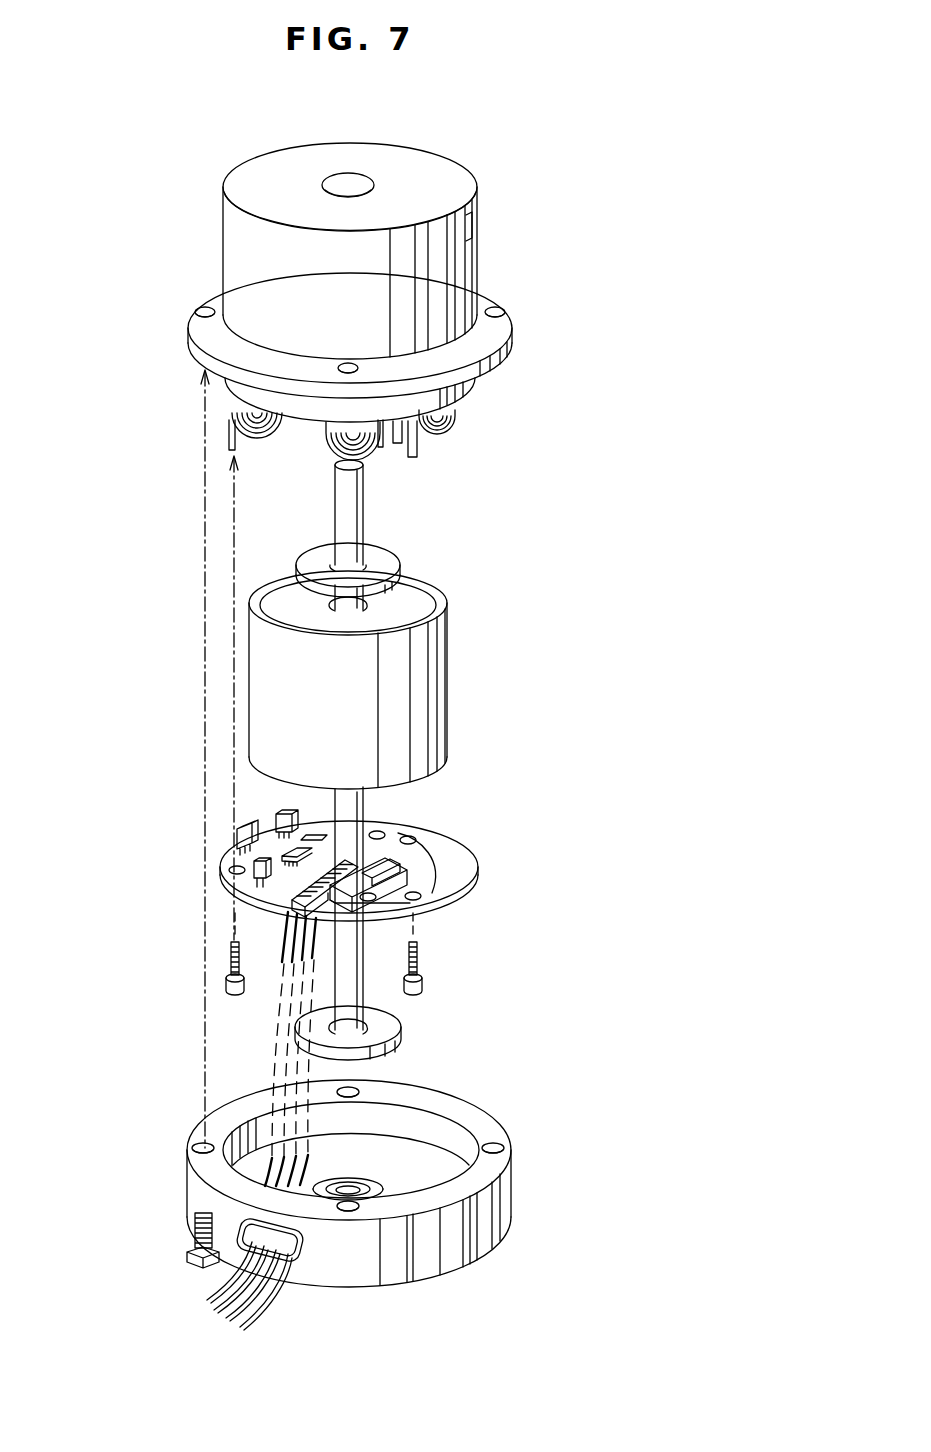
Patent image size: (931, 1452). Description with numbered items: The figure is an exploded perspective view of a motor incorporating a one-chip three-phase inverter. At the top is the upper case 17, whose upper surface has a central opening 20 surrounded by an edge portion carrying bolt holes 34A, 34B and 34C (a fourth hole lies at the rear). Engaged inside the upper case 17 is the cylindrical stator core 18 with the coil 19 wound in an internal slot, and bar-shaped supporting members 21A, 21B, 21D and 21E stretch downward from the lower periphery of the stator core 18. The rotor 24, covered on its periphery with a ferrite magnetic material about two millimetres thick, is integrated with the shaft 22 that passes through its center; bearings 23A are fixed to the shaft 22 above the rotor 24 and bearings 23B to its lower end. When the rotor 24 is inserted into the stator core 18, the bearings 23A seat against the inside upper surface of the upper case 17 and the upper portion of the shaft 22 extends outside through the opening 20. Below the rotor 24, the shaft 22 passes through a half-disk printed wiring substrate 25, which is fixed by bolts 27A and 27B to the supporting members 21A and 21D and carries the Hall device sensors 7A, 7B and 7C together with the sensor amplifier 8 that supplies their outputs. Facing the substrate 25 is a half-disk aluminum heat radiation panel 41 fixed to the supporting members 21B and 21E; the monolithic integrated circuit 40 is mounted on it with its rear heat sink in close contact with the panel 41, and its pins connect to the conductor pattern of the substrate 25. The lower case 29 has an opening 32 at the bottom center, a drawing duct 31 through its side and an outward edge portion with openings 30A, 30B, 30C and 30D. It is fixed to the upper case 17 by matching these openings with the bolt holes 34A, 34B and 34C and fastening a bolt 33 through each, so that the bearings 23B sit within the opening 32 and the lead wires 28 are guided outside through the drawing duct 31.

The upper case 17 is at (470, 232).
The stator core 18 is at (471, 385).
The coil 19 is at (452, 418).
The opening 20 is at (371, 182).
The supporting member 21A is at (228, 437).
The supporting member 21B is at (418, 445).
The supporting member 21D is at (381, 448).
The supporting member 21E is at (398, 445).
The shaft 22 is at (334, 494).
The bearings 23A is at (402, 568).
The bearings 23B is at (402, 1022).
The rotor 24 is at (448, 667).
The printed wiring substrate 25 is at (221, 858).
The Hall device sensor 7A is at (285, 812).
The Hall device sensor 7B is at (240, 838).
The Hall device sensor 7C is at (252, 863).
The sensor amplifier 8 is at (297, 866).
The bolt 27A is at (230, 972).
The bolt 27B is at (420, 968).
The lead wires 28 is at (208, 1298).
The lower case 29 is at (480, 1226).
The opening 30A is at (192, 1148).
The opening 30B is at (350, 1213).
The opening 30C is at (505, 1148).
The opening 30D is at (360, 1088).
The drawing duct 31 is at (308, 1258).
The opening 32 is at (356, 1183).
The bolt 33 is at (194, 1228).
The bolt hole 34A is at (199, 312).
The bolt hole 34B is at (347, 363).
The bolt hole 34C is at (497, 311).
The monolithic integrated circuit 40 is at (398, 833).
The heat radiation panel 41 is at (476, 868).